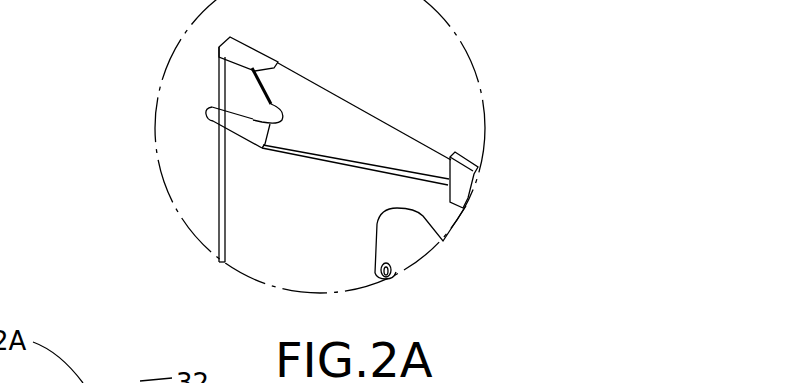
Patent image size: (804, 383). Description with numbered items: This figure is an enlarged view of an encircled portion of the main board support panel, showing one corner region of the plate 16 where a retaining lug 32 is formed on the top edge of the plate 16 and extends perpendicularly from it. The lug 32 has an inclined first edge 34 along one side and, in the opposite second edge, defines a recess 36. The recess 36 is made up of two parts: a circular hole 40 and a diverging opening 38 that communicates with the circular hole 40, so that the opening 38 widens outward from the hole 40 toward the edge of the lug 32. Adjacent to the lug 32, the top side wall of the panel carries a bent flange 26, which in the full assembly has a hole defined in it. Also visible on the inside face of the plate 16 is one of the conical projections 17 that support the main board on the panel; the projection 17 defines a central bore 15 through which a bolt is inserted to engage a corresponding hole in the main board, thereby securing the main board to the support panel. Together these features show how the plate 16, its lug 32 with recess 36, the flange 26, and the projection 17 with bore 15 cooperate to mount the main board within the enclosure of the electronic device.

The central bore 15 is at (390, 280).
The plate 16 is at (260, 232).
The conical projection 17 is at (408, 247).
The bent flange 26 is at (462, 176).
The retaining lug 32 is at (328, 125).
The inclined first edge 34 is at (333, 168).
The recess 36 is at (151, 139).
The diverging opening 38 is at (247, 102).
The circular hole 40 is at (183, 178).